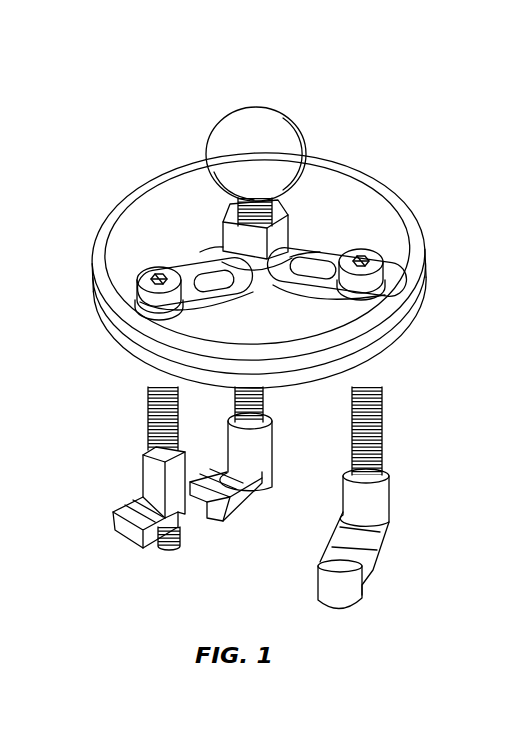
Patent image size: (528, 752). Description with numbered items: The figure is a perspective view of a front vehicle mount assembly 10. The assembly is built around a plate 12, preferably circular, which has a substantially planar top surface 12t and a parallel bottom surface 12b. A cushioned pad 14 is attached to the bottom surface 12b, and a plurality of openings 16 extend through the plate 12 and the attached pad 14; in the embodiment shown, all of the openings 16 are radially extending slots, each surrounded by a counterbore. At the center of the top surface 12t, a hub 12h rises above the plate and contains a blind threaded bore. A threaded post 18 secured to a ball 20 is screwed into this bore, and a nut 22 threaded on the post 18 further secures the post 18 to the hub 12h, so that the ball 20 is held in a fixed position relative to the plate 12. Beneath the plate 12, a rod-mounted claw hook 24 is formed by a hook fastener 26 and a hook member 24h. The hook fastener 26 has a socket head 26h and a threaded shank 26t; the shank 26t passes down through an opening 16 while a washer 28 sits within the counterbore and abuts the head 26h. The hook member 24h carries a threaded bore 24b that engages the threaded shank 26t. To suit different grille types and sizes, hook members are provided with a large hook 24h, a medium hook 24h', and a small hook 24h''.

The front vehicle mount assembly 10 is at (386, 137).
The plate 12 is at (396, 213).
The top surface 12t is at (155, 206).
The bottom surface 12b is at (130, 350).
The hub 12h is at (266, 264).
The cushioned pad 14 is at (100, 325).
The openings 16 is at (200, 290).
The threaded post 18 is at (228, 214).
The ball 20 is at (246, 118).
The nut 22 is at (281, 233).
The rod-mounted claw hook 24 is at (404, 507).
The threaded bore 24b is at (145, 448).
The hook member 24h is at (382, 564).
The hook member with medium hook 24h' is at (231, 486).
The hook member with small hook 24h'' is at (114, 530).
The hook fastener 26 is at (383, 418).
The threaded shank 26t is at (143, 398).
The head 26h is at (148, 298).
The washer 28 is at (398, 303).